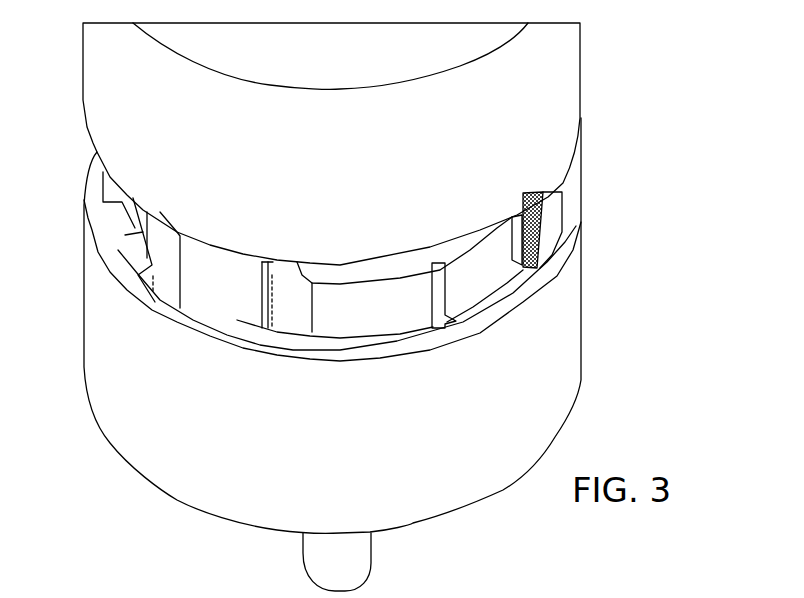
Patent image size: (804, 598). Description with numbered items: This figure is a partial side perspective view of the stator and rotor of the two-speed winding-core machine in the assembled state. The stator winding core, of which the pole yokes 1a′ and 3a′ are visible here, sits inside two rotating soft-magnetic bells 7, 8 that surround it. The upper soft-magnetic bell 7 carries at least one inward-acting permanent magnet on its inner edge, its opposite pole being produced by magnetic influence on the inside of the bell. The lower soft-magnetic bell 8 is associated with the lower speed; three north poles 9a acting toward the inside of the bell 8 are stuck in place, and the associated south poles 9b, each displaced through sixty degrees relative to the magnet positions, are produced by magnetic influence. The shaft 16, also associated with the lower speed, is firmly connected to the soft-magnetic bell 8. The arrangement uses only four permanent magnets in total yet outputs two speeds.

The soft-magnetic bell 7 is at (550, 85).
The soft-magnetic bell 8 is at (550, 348).
The shaft 16 is at (300, 557).
The yoke 3a′ is at (212, 285).
The north pole 9a is at (307, 336).
The south pole 9b is at (128, 235).
The yoke 1a′ is at (500, 276).